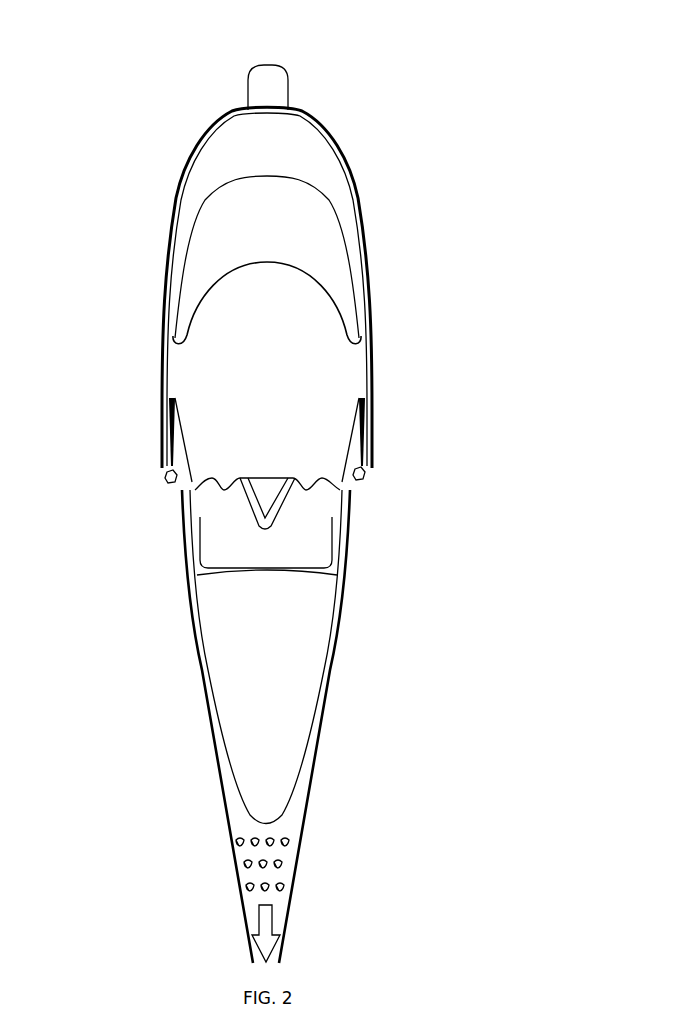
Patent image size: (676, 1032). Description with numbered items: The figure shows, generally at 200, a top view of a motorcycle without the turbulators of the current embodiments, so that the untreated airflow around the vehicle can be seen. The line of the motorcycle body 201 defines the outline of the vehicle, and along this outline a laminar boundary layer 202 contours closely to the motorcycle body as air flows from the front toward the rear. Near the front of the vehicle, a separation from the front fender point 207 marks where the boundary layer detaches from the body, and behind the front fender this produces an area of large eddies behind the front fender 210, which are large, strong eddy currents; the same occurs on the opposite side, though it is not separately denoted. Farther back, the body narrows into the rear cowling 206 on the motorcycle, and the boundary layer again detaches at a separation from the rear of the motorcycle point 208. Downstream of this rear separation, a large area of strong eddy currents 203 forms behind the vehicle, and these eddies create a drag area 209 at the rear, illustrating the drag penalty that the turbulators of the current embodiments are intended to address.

The top view of a vehicle 200 is at (520, 41).
The line of the motorcycle body 201 is at (320, 151).
The laminar boundary layer 202 is at (355, 198).
The eddy currents 203 is at (289, 854).
The rear cowling 206 is at (294, 678).
The separation from the front fender point 207 is at (152, 422).
The separation from the rear of the motorcycle point 208 is at (203, 756).
The drag area 209 is at (282, 913).
The large eddies behind the front fender 210 is at (376, 478).